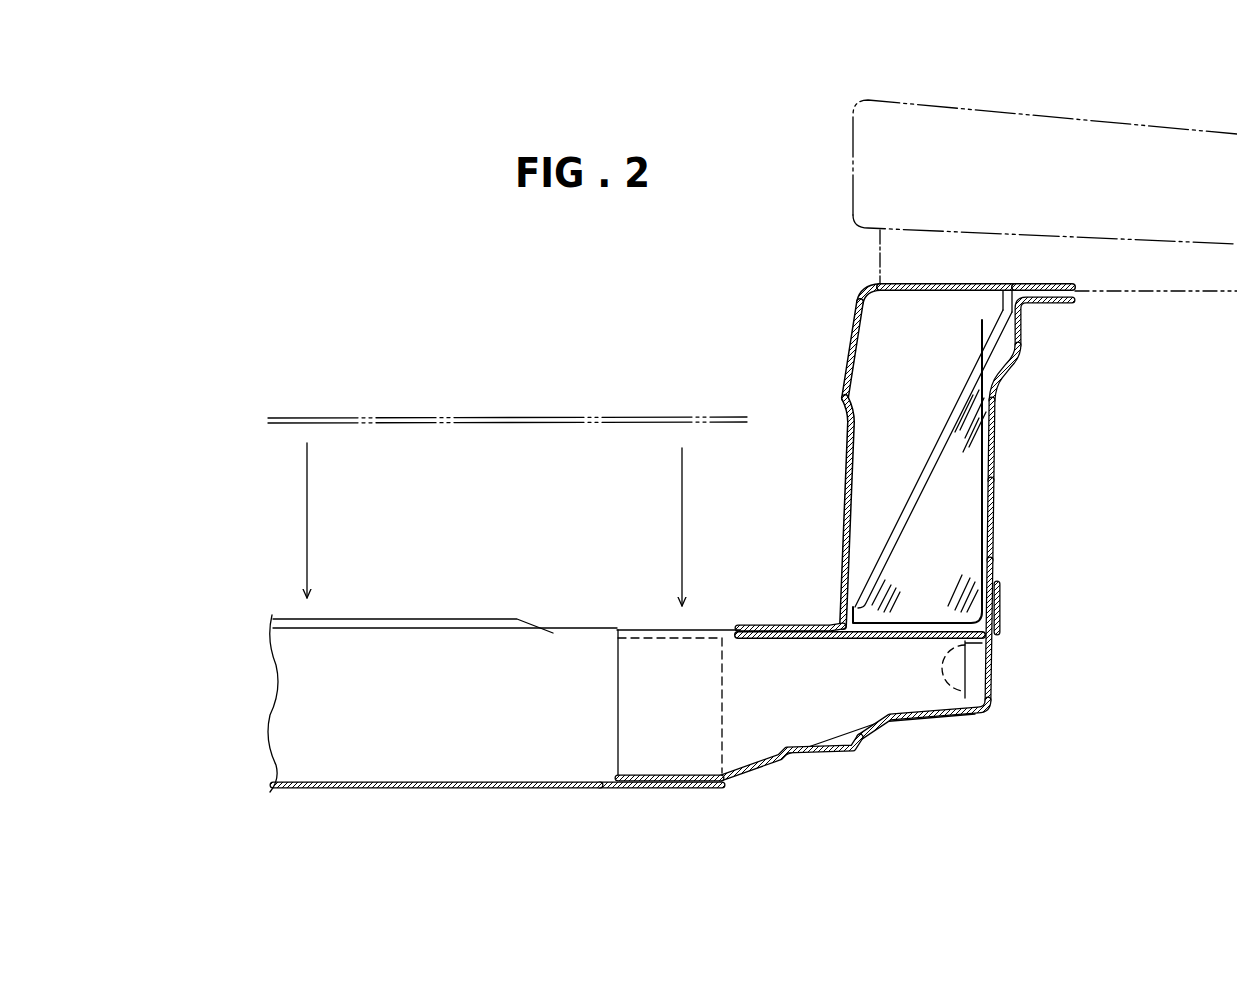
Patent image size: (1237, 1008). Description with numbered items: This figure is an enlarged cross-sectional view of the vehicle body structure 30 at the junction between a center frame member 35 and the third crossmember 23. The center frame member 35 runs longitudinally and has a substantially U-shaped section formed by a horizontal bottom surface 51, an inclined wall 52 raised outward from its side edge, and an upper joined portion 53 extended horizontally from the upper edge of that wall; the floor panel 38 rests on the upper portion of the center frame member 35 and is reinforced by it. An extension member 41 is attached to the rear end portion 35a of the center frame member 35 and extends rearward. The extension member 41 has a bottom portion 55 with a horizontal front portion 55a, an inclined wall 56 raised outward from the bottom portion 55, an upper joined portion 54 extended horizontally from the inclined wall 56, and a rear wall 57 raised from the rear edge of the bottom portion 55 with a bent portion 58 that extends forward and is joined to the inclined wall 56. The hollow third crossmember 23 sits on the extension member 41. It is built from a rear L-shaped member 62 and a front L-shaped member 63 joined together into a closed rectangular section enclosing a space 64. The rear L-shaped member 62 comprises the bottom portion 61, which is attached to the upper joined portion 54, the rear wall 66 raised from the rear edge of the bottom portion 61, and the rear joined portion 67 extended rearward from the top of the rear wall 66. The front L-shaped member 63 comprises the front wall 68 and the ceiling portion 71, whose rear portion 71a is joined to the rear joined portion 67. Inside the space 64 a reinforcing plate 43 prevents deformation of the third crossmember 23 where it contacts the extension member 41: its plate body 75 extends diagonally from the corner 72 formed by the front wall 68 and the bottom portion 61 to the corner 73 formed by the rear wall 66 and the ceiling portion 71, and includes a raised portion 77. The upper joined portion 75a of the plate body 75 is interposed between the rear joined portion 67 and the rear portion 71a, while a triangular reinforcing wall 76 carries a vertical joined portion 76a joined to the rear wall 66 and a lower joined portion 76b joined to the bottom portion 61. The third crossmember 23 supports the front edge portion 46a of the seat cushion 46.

The third crossmember 23 is at (852, 330).
The vehicle body structure 30 is at (1130, 387).
The center frame member 35 is at (397, 790).
The rear end portion 35a is at (670, 786).
The floor panel 38 is at (452, 417).
The extension member 41 is at (917, 641).
The reinforcing plate 43 is at (918, 468).
The seat cushion 46 is at (1030, 112).
The front edge portion 46a is at (931, 106).
The bottom surface 51 is at (321, 789).
The inclined wall 52 is at (313, 716).
The upper joined portion 53 is at (396, 624).
The upper joined portion 54 is at (720, 634).
The bottom portion 55 is at (884, 733).
The front portion 55a is at (643, 784).
The inclined wall 56 is at (648, 706).
The rear wall 57 is at (1002, 607).
The bent portion 58 is at (955, 666).
The bottom portion 61 is at (838, 641).
The rear L-shaped member 62 is at (1000, 511).
The front L-shaped member 63 is at (858, 286).
The space 64 is at (933, 374).
The rear wall 66 is at (1000, 435).
The rear joined portion 67 is at (1048, 303).
The front wall 68 is at (848, 512).
The ceiling portion 71 is at (933, 286).
The rear portion 71a is at (1033, 287).
The corner 72 is at (838, 618).
The corner 73 is at (1010, 290).
The plate body 75 is at (933, 448).
The upper joined portion 75a is at (1060, 287).
The reinforcing wall 76 is at (957, 528).
The vertical joined portion 76a is at (996, 473).
The lower joined portion 76b is at (903, 739).
The raised portion 77 is at (948, 418).